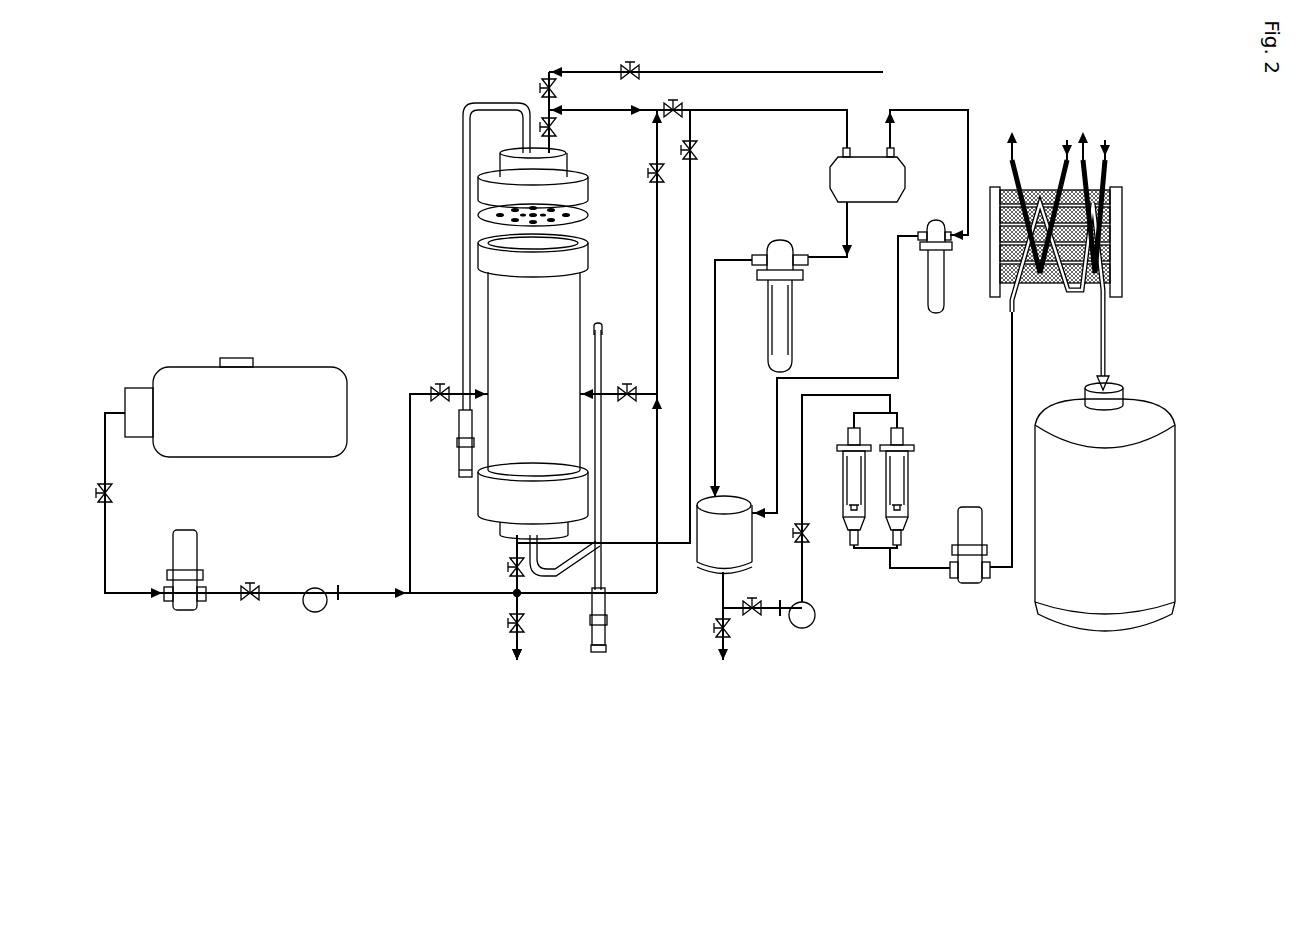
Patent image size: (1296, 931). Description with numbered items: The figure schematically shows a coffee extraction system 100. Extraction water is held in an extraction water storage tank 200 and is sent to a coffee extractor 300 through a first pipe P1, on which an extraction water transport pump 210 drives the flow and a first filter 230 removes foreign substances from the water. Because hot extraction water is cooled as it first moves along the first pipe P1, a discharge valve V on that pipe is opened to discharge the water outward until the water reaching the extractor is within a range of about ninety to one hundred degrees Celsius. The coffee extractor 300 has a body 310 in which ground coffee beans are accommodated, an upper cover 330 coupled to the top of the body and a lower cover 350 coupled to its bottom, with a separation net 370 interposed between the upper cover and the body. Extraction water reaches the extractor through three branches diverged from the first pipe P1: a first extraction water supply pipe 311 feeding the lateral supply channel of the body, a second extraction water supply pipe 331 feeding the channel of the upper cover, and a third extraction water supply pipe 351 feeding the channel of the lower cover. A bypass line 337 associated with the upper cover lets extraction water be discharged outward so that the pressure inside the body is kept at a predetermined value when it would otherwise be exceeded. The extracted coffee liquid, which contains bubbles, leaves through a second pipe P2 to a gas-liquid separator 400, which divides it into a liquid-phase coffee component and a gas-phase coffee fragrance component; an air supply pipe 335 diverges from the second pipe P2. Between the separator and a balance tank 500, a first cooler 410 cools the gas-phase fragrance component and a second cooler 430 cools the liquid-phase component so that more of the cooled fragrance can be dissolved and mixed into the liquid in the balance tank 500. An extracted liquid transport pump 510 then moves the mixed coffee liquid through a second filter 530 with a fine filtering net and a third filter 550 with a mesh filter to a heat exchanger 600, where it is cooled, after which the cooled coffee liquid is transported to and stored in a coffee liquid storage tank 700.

The coffee extraction system 100 is at (208, 134).
The extraction water storage tank 200 is at (176, 360).
The extraction water transport pump 210 is at (326, 620).
The first filter 230 is at (200, 549).
The coffee extractor 300 is at (460, 96).
The body 310 is at (486, 322).
The first extraction water supply pipe 311 is at (408, 487).
The upper cover 330 is at (490, 178).
The second extraction water supply pipe 331 is at (655, 218).
The air supply pipe 335 is at (582, 66).
The circulation tube 337 is at (463, 130).
The lower cover 350 is at (486, 522).
The third extraction water supply pipe 351 is at (510, 552).
The separation net 370 is at (482, 218).
The gas-liquid separator 400 is at (828, 195).
The first cooler 410 is at (943, 315).
The second cooler 430 is at (796, 295).
The balance tank 500 is at (702, 575).
The extracted liquid transport pump 510 is at (817, 630).
The second filter 530 is at (918, 465).
The third filter 550 is at (974, 588).
The heat exchanger 600 is at (1128, 183).
The coffee liquid storage tank 700 is at (1157, 397).
The first pipe P1 is at (130, 598).
The second pipe P2 is at (762, 112).
The discharge valve V is at (523, 627).